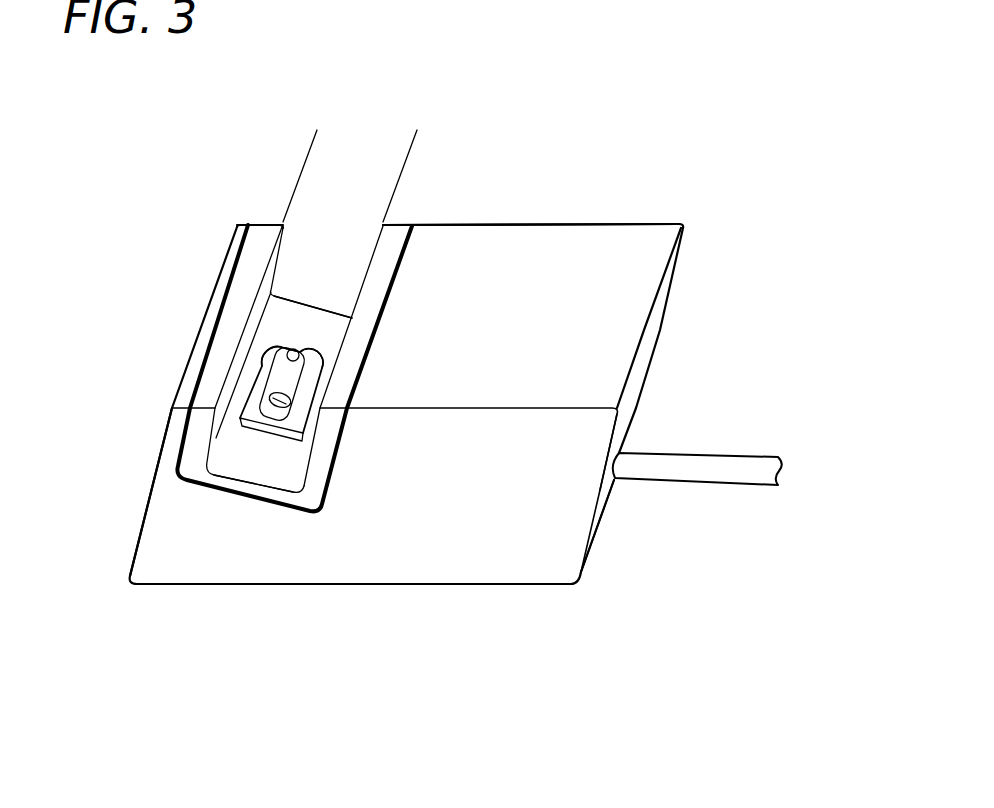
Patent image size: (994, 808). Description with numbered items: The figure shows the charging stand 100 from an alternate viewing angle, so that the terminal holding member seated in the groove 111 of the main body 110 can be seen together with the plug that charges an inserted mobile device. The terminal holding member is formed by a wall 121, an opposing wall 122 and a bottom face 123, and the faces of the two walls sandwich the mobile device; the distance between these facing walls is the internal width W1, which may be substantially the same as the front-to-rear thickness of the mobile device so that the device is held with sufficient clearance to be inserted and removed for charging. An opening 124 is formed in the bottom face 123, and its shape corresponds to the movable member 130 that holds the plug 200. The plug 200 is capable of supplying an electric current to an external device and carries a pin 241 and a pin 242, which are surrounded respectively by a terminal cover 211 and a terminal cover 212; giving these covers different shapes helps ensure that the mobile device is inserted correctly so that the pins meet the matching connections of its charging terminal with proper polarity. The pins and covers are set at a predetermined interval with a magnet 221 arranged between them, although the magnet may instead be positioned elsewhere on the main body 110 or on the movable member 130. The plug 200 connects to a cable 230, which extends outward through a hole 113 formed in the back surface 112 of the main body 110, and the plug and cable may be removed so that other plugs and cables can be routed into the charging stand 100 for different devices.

The charging stand 100 is at (533, 588).
The main body 110 is at (638, 242).
The groove 111 is at (190, 482).
The back surface 112 is at (647, 364).
The hole 113 is at (633, 436).
The wall 121 is at (362, 265).
The wall 122 is at (273, 247).
The bottom face 123 is at (280, 478).
The opening 124 is at (245, 434).
The movable member 130 is at (261, 369).
The plug 200 is at (254, 388).
The terminal cover 211 is at (286, 346).
The terminal cover 212 is at (240, 418).
The magnet 221 is at (288, 375).
The cable 230 is at (705, 467).
The pin 241 is at (300, 352).
The pin 242 is at (304, 412).
The internal width W1 is at (310, 153).